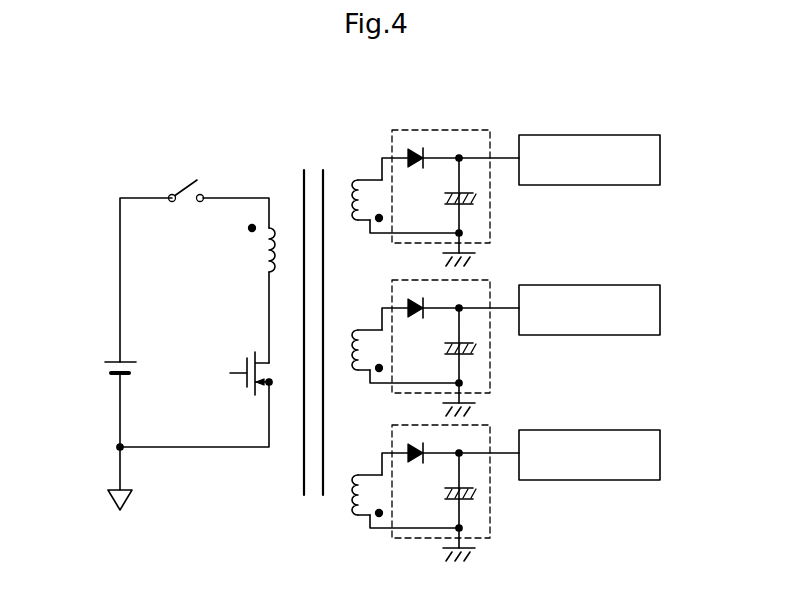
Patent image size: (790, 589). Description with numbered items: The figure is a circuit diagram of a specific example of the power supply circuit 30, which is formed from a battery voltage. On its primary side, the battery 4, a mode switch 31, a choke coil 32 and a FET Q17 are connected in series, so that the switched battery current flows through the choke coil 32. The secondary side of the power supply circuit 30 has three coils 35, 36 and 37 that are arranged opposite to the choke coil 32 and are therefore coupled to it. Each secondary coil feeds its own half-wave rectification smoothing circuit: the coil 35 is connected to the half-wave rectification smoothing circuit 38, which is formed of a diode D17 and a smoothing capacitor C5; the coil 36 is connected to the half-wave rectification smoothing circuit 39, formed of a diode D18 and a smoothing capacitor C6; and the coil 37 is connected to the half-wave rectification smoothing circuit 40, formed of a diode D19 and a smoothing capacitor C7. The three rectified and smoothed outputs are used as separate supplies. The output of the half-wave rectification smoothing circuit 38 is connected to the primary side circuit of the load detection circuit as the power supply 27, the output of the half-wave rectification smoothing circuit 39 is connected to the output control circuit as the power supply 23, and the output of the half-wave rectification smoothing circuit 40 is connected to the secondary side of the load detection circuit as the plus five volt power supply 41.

The power supply circuit 30 is at (300, 110).
The mode switch 31 is at (214, 181).
The choke coil 32 is at (249, 251).
The battery 4 is at (108, 362).
The FET Q17 is at (232, 385).
The coil 35 is at (343, 198).
The coil 36 is at (355, 327).
The coil 37 is at (355, 472).
The diode D17 is at (415, 172).
The diode D18 is at (418, 329).
The diode D19 is at (418, 474).
The smoothing capacitor C5 is at (479, 199).
The smoothing capacitor C6 is at (496, 345).
The smoothing capacitor C7 is at (496, 490).
The half-wave rectification smoothing circuit 38 is at (489, 127).
The half-wave rectification smoothing circuit 39 is at (459, 311).
The half-wave rectification smoothing circuit 40 is at (459, 456).
The power supply 27 is at (630, 186).
The power supply 23 is at (599, 327).
The +5V power supply 41 is at (599, 472).